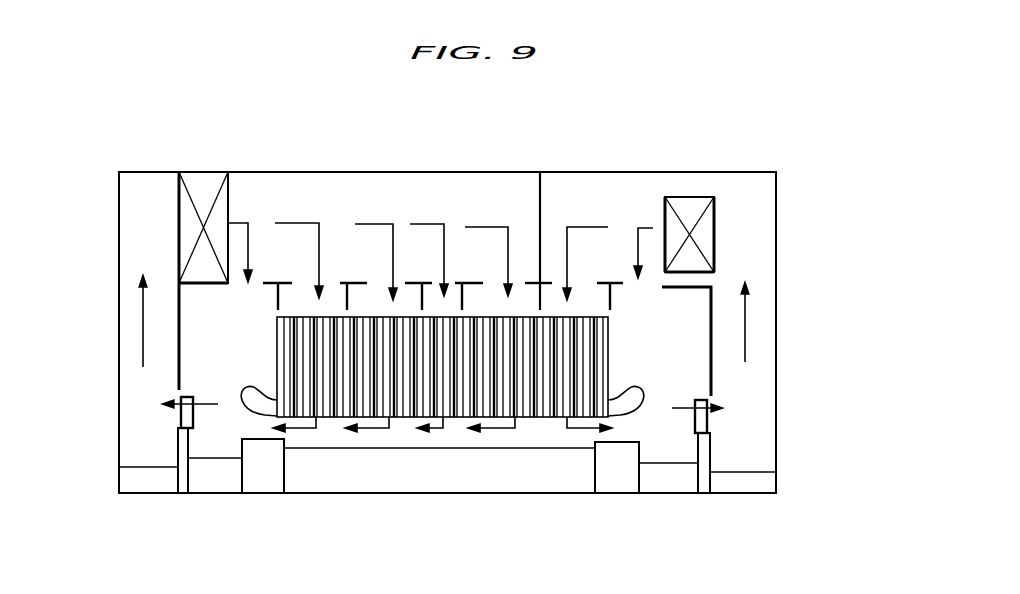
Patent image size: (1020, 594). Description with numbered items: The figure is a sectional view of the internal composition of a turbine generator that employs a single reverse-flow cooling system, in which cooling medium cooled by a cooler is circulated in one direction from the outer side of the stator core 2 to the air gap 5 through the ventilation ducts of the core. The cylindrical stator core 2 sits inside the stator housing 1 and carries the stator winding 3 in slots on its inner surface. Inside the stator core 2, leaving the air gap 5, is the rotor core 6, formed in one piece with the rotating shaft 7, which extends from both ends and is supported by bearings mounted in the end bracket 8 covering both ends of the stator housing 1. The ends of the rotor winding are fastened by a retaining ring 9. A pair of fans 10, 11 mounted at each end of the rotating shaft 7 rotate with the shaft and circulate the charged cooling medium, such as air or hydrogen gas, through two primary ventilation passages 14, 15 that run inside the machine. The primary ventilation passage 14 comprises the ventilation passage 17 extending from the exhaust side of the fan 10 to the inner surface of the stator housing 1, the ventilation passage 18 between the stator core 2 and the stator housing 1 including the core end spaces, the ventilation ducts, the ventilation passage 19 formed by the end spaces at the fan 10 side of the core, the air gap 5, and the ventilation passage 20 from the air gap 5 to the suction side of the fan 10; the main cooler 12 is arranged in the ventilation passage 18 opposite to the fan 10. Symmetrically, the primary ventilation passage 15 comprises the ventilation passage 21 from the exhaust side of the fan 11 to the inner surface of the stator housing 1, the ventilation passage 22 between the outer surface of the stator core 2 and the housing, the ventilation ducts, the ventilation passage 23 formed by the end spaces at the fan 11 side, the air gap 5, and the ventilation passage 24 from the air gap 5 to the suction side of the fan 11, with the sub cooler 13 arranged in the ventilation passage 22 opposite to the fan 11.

The stator housing 1 is at (540, 172).
The stator core 2 is at (345, 330).
The stator winding 3 is at (228, 190).
The air gap 5 is at (337, 440).
The rotor core 6 is at (519, 470).
The rotating shaft 7 is at (145, 475).
The end bracket 8 is at (119, 204).
The retaining ring 9 is at (263, 465).
The fan 10 is at (181, 414).
The fan 11 is at (707, 425).
The main cooler 12 is at (203, 186).
The sub cooler 13 is at (692, 212).
The primary ventilation passage 14 is at (142, 447).
The primary ventilation passage 15 is at (776, 183).
The ventilation passage 17 is at (127, 320).
The ventilation passage 18 is at (443, 186).
The ventilation passage 19 is at (190, 360).
The ventilation passage 20 is at (218, 450).
The ventilation passage 21 is at (755, 322).
The ventilation passage 22 is at (612, 190).
The ventilation passage 23 is at (687, 351).
The ventilation passage 24 is at (673, 440).